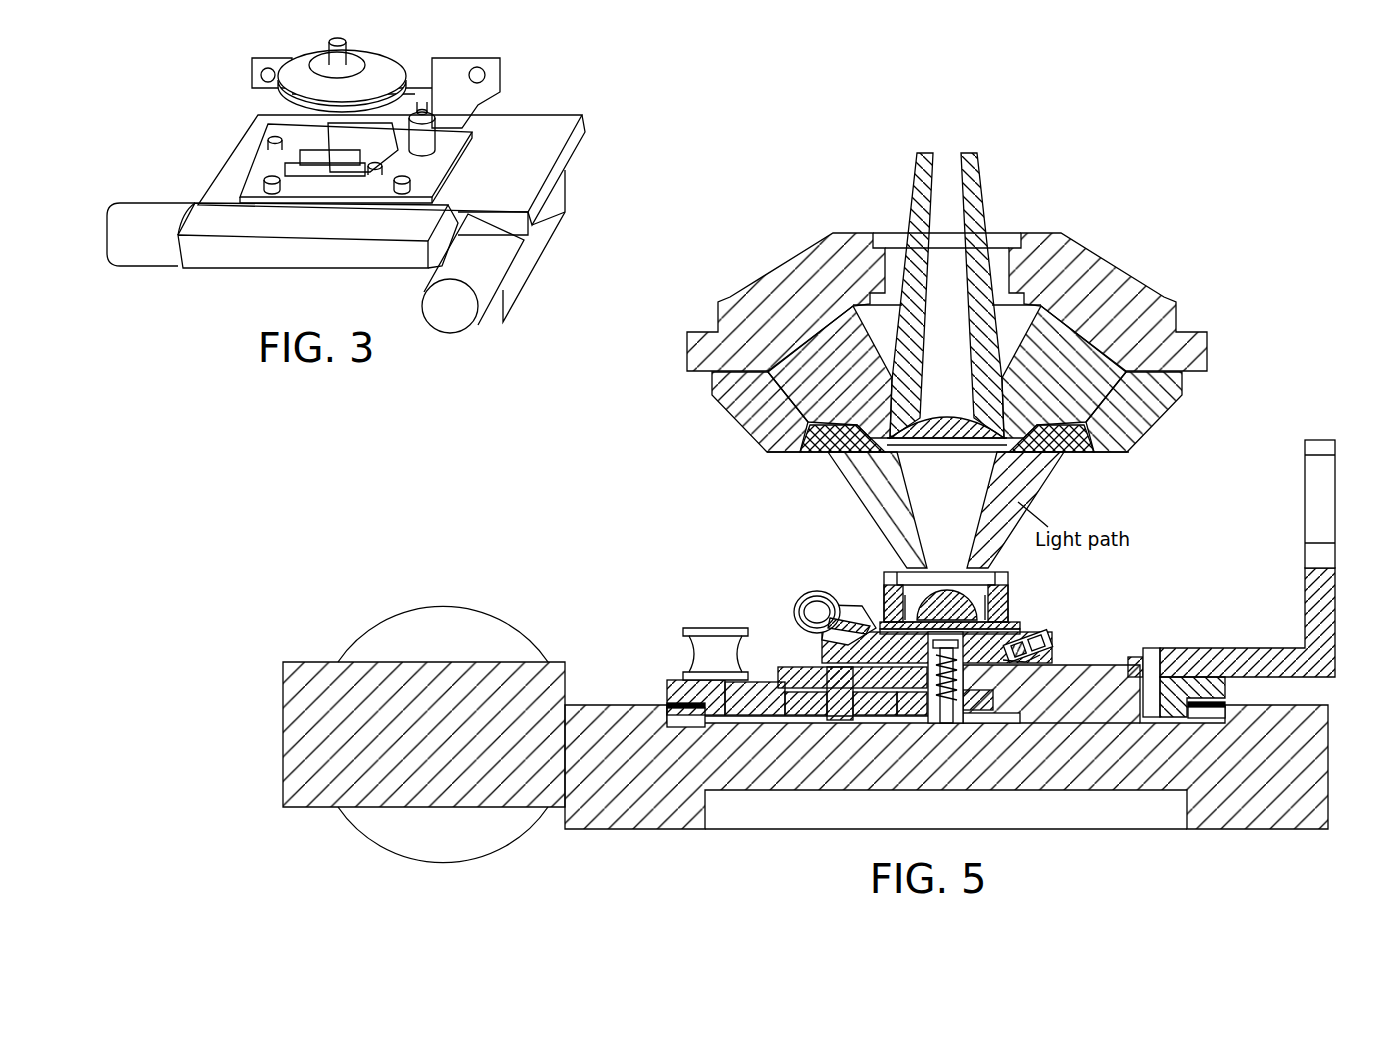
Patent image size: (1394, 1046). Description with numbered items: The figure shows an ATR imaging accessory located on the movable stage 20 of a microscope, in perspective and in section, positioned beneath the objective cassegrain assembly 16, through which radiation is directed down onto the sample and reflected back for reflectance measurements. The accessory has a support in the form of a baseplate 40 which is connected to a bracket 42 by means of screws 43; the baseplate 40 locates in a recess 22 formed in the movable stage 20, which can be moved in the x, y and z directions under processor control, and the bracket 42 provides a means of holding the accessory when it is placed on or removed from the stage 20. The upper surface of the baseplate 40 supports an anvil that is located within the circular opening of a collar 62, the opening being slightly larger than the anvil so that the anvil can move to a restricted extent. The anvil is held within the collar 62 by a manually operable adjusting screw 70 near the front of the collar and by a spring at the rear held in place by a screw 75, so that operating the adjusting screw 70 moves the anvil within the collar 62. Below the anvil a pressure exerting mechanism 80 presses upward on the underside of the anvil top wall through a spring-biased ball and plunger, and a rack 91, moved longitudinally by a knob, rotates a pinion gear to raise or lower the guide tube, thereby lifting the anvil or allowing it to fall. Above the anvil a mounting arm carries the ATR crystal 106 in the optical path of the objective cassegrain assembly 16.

In FIG. 5, the objective cassegrain assembly 16 is at (1128, 265).
In FIG. 3, the movable stage 20 is at (545, 128).
In FIG. 5, the movable stage 20 is at (620, 815).
In FIG. 5, the recess 22 is at (1213, 713).
In FIG. 3, the baseplate 40 is at (258, 168).
In FIG. 5, the baseplate 40 is at (1226, 688).
In FIG. 5, the bracket 42 is at (1320, 598).
In FIG. 5, the screws 43 is at (1151, 655).
In FIG. 5, the collar 62 is at (826, 659).
In FIG. 5, the adjusting screw 70 is at (821, 591).
In FIG. 5, the screw 75 is at (1053, 639).
In FIG. 5, the pressure exerting mechanism 80 is at (957, 725).
In FIG. 5, the rack 91 is at (747, 697).
In FIG. 5, the ATR crystal 106 is at (951, 586).